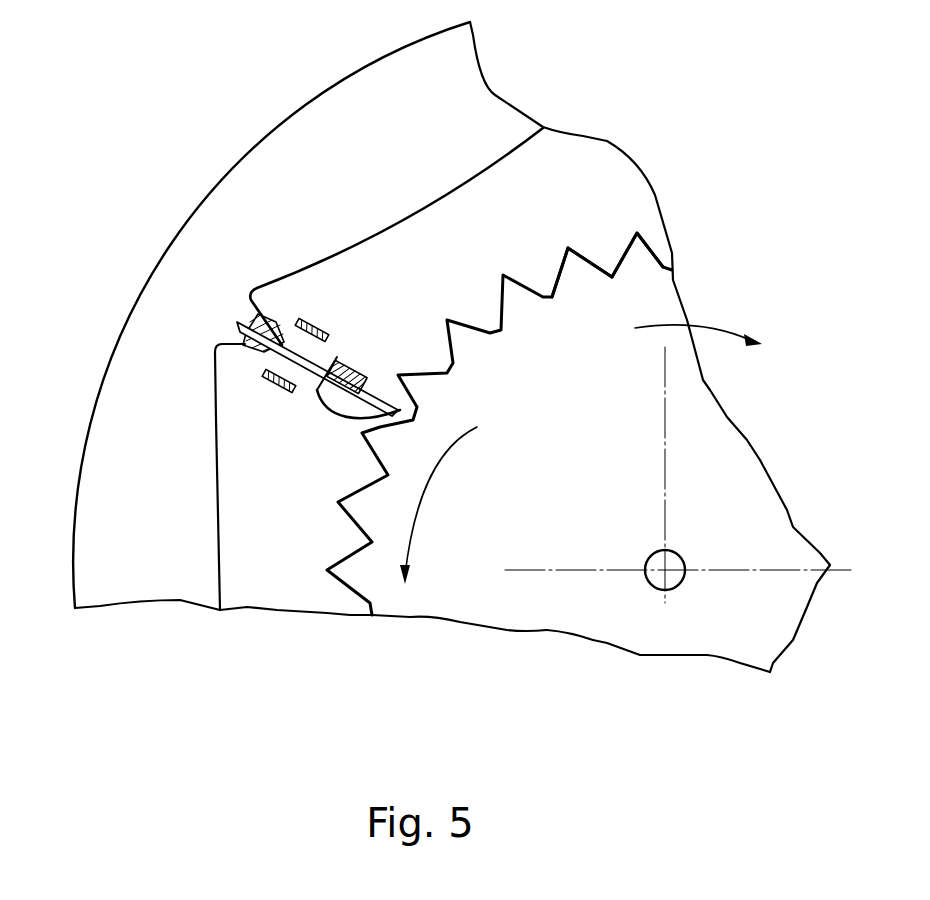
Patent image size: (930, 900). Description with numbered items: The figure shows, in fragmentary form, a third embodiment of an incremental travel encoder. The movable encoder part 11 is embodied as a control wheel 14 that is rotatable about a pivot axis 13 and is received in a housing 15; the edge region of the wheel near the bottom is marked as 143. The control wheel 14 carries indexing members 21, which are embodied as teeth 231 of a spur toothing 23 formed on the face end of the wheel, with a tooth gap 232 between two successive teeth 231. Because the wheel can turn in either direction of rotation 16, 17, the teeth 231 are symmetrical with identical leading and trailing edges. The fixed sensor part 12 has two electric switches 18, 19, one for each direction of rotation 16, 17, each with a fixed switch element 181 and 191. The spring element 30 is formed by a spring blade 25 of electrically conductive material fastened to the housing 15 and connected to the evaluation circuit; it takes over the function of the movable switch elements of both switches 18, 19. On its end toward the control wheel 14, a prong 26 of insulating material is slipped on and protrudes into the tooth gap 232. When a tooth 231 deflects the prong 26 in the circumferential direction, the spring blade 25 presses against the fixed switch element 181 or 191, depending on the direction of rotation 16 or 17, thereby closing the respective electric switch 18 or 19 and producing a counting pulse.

The encoder part 11 is at (757, 460).
The sensor part 12 is at (240, 423).
The pivot axis 13 is at (672, 577).
The control wheel 14 is at (497, 612).
The bottom edge section 143 is at (568, 608).
The housing 15 is at (203, 247).
The direction of rotation 16 is at (703, 325).
The direction of rotation 17 is at (415, 517).
The electric switch 18 is at (348, 328).
The fixed switch element 181 is at (313, 323).
The electric switch 19 is at (298, 405).
The fixed switch element 191 is at (273, 380).
The indexing member 21 is at (655, 225).
The spur toothing 23 is at (531, 250).
The tooth 231 is at (572, 263).
The tooth gap 232 is at (605, 268).
The spring blade 25 is at (280, 330).
The prong 26 is at (387, 410).
The spring element 30 is at (328, 415).